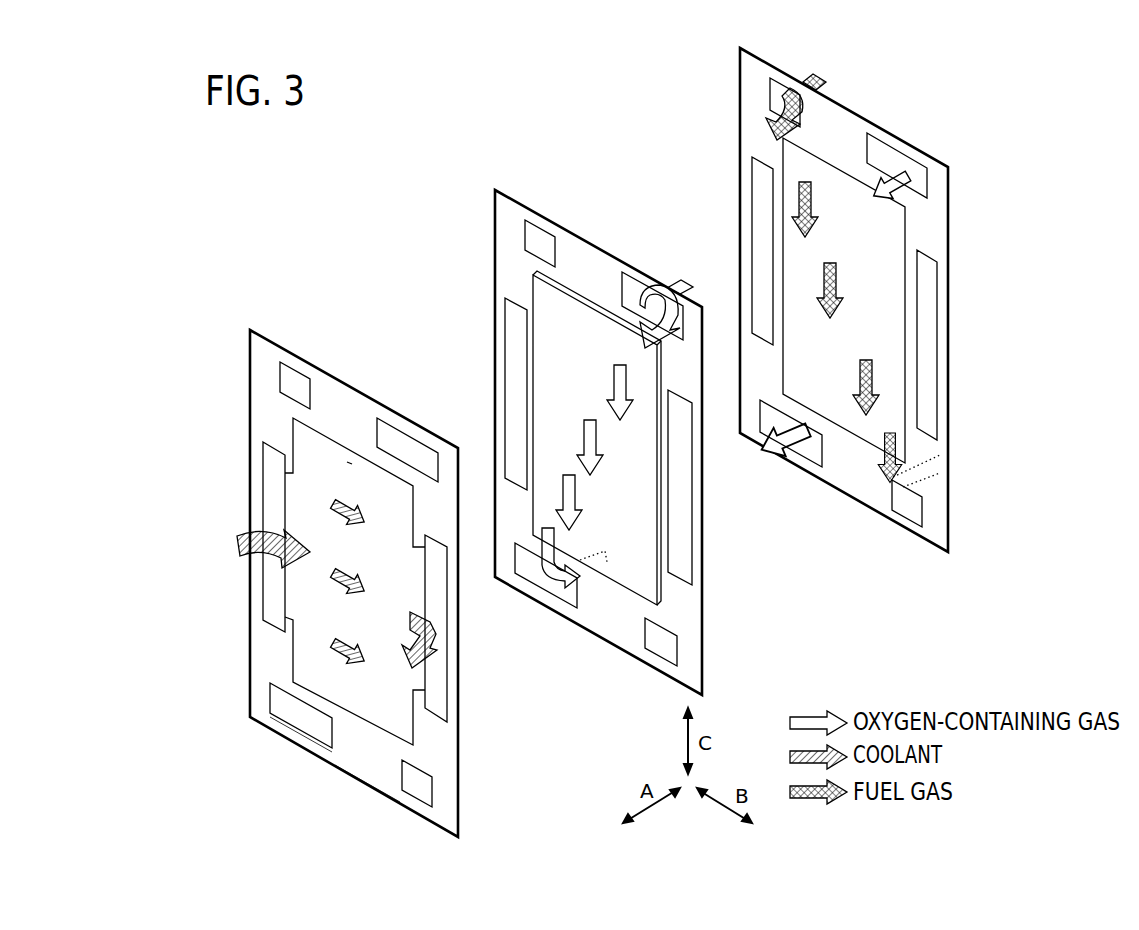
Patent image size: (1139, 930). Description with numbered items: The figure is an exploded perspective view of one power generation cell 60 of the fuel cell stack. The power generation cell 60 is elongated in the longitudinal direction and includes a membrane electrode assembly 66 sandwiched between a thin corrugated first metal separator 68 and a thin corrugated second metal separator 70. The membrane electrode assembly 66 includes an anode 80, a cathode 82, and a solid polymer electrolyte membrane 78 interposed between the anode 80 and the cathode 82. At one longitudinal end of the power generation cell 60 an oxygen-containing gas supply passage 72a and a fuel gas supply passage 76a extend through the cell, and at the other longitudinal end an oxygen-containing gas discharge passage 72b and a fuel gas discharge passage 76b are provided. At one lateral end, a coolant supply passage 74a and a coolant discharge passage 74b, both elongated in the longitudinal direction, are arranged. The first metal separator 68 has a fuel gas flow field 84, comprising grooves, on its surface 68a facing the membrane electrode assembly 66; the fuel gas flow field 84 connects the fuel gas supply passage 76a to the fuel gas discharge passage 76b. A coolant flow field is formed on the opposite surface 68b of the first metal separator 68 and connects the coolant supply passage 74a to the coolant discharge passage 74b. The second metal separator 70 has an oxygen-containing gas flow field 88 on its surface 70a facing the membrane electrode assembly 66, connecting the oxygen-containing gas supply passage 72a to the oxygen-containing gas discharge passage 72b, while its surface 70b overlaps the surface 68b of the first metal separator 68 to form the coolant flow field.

The power generation cell 60 is at (334, 208).
The membrane electrode assembly 66 is at (492, 186).
The first metal separator 68 is at (736, 62).
The second metal separator 70 is at (247, 326).
The surface of the second metal separator 70a is at (300, 738).
The surface of the second metal separator 70b is at (350, 762).
The oxygen-containing gas supply passage 72a is at (410, 450).
The oxygen-containing gas discharge passage 72b is at (288, 708).
The coolant supply passage 74a is at (270, 588).
The coolant discharge passage 74b is at (438, 705).
The fuel gas supply passage 76a is at (303, 381).
The fuel gas discharge passage 76b is at (417, 775).
The solid polymer electrolyte membrane 78 is at (590, 613).
The anode 80 is at (603, 333).
The cathode 82 is at (567, 310).
The fuel gas flow field 84 is at (802, 163).
The oxygen-containing gas flow field 88 is at (347, 462).
The surface of the first metal separator 68a is at (840, 480).
The surface of the first metal separator 68b is at (800, 463).